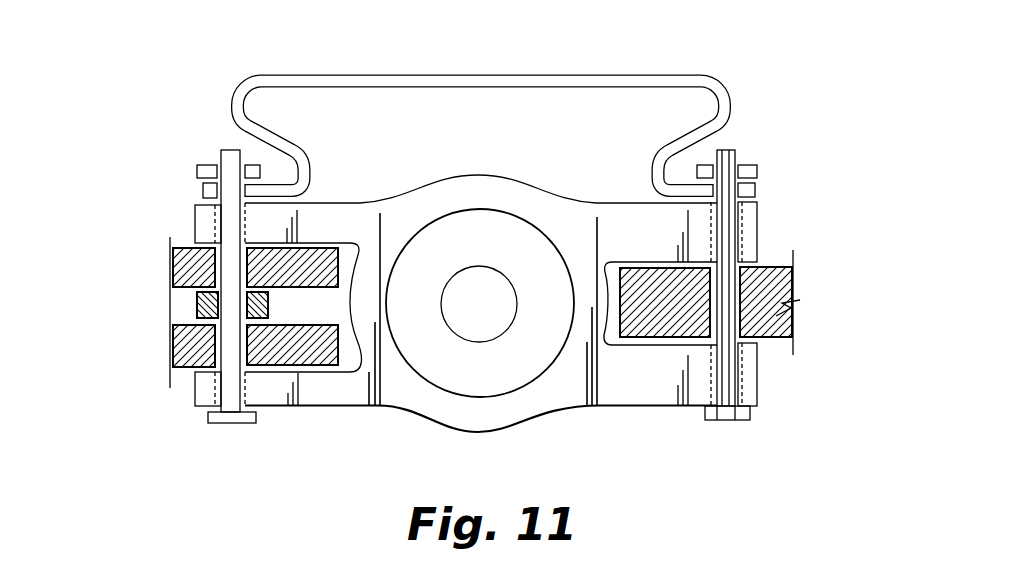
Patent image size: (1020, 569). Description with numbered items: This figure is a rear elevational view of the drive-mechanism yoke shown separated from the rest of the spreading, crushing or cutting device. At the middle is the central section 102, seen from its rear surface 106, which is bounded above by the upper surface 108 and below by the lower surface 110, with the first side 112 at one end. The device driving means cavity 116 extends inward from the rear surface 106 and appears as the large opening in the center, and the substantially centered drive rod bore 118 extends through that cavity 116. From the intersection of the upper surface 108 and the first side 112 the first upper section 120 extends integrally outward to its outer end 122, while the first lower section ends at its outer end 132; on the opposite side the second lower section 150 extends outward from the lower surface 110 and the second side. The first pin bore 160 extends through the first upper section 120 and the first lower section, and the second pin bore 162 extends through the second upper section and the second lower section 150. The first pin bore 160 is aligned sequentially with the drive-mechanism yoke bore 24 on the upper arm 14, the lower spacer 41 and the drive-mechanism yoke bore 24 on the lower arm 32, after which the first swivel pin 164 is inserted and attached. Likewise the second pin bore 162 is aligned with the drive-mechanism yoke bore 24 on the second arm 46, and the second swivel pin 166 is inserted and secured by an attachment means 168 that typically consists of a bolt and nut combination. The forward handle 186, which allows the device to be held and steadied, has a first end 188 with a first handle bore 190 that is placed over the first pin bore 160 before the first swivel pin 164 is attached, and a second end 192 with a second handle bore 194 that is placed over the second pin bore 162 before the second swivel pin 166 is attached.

The upper arm 14 is at (178, 267).
The drive-mechanism yoke bore 24 is at (745, 288).
The lower arm 32 is at (175, 330).
The lower spacer 41 is at (198, 302).
The second arm 46 is at (800, 300).
The central section 102 is at (481, 257).
The rear surface 106 is at (481, 257).
The upper surface 108 is at (411, 195).
The lower surface 110 is at (503, 432).
The first side 112 is at (348, 250).
The device driving means cavity 116 is at (432, 352).
The drive rod bore 118 is at (477, 307).
The first upper section 120 is at (304, 217).
The outer end 122 is at (195, 227).
The outer end 132 is at (197, 383).
The second lower section 150 is at (618, 393).
The first pin bore 160 is at (195, 213).
The second pin bore 162 is at (748, 222).
The first swivel pin 164 is at (225, 190).
The second swivel pin 166 is at (722, 248).
The attachment means 168 is at (757, 168).
The forward handle 186 is at (683, 82).
The first end 188 is at (275, 180).
The first handle bore 190 is at (205, 180).
The second end 192 is at (672, 183).
The second handle bore 194 is at (757, 188).